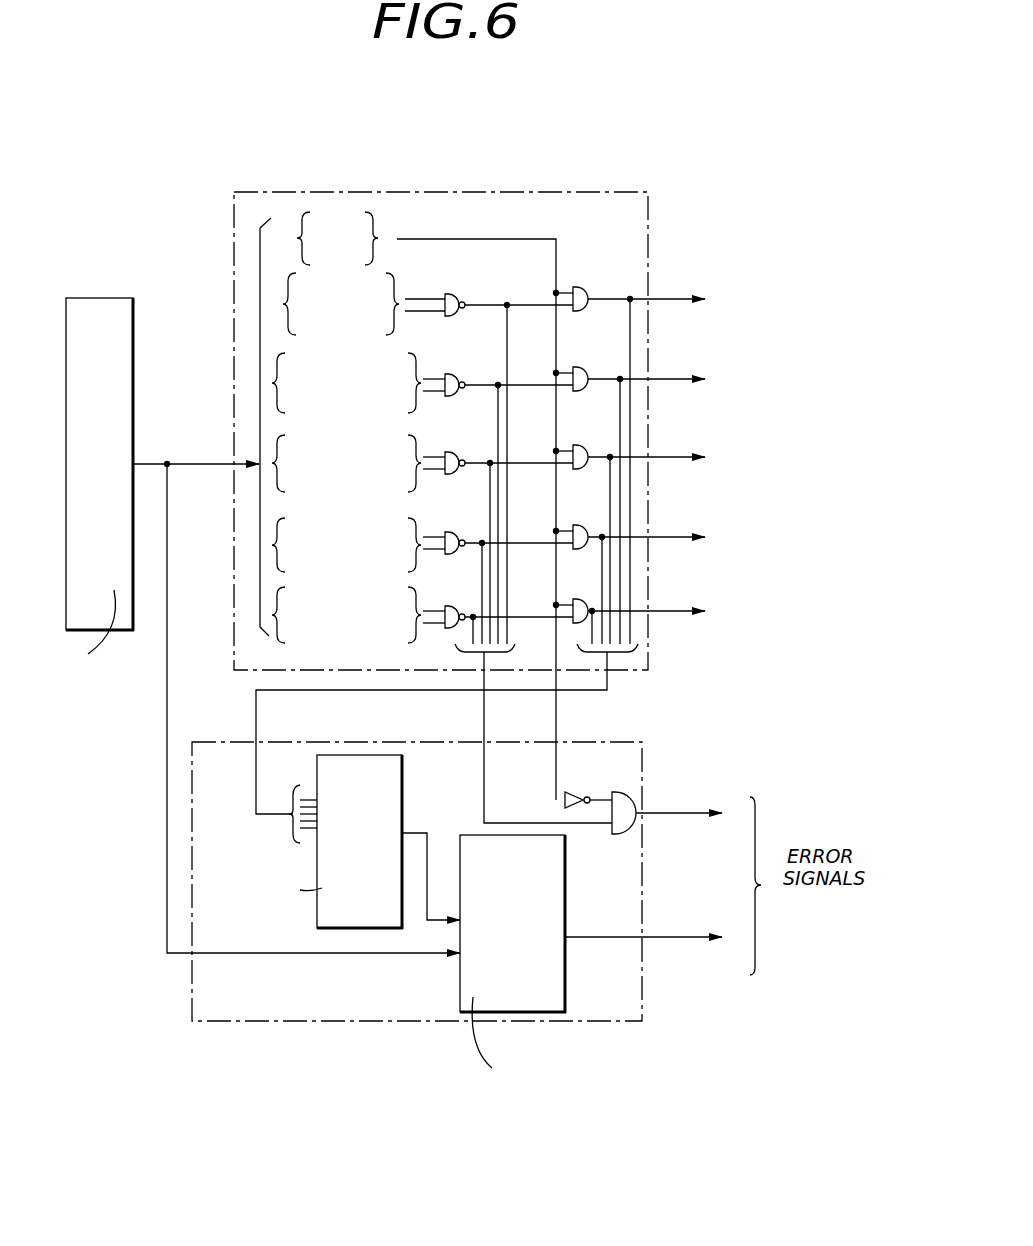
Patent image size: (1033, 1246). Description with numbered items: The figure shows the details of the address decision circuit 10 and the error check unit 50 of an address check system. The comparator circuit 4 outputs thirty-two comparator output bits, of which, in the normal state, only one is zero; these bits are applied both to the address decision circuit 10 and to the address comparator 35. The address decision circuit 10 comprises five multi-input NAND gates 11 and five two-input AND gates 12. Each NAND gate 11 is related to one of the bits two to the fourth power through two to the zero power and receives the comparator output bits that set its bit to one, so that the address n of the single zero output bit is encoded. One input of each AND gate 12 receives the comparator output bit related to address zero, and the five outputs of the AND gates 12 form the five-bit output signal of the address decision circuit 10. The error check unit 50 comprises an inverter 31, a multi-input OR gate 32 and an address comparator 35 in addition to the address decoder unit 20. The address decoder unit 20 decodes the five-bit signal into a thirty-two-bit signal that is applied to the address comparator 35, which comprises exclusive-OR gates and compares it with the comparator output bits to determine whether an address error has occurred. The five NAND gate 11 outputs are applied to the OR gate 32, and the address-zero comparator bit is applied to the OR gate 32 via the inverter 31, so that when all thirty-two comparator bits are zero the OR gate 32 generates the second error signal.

The comparator circuit 4 is at (80, 298).
The address decision circuit 10 is at (292, 192).
The multi-input NAND gates 11 is at (455, 293).
The two-input AND gates 12 is at (578, 286).
The address decoder unit 20 is at (402, 790).
The inverter 31 is at (582, 790).
The multi-input OR gate 32 is at (199, 458).
The address comparator 35 is at (565, 913).
The error check unit 50 is at (303, 1021).